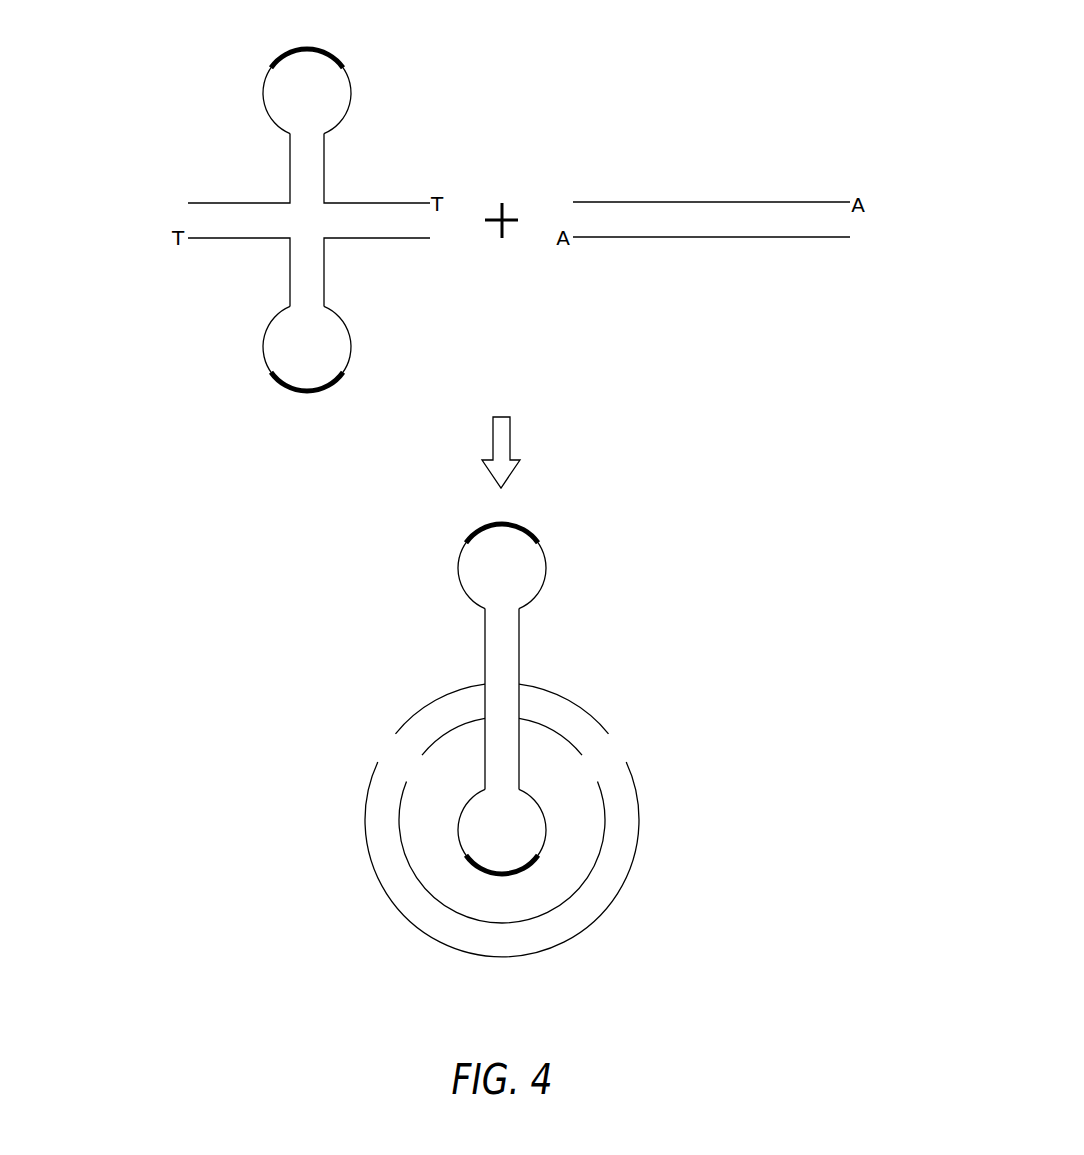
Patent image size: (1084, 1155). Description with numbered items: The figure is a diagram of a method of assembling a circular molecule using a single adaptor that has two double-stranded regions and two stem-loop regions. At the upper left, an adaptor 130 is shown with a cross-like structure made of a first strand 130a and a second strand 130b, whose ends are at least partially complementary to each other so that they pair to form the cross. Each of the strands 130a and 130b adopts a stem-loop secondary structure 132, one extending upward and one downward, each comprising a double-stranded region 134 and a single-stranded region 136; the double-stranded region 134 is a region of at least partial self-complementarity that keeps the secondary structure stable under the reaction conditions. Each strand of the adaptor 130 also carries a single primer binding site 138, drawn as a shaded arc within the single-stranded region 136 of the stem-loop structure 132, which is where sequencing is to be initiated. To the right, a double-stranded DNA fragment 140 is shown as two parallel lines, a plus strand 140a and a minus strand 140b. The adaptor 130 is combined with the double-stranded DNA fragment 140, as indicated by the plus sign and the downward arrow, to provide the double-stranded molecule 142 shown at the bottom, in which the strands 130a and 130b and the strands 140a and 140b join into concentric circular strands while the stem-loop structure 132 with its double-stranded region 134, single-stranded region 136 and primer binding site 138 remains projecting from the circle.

The adaptor 130 is at (193, 75).
The first strand 130a is at (213, 202).
The second strand 130b is at (213, 239).
The stem-loop secondary structure 132 is at (254, 49).
The double-stranded region 134 is at (363, 140).
The single-stranded region 136 is at (363, 49).
The primer binding site 138 is at (318, 49).
The double-stranded DNA fragment 140 is at (804, 136).
The plus strand 140a is at (733, 202).
The minus strand 140b is at (750, 238).
The double-stranded molecule 142 is at (668, 817).